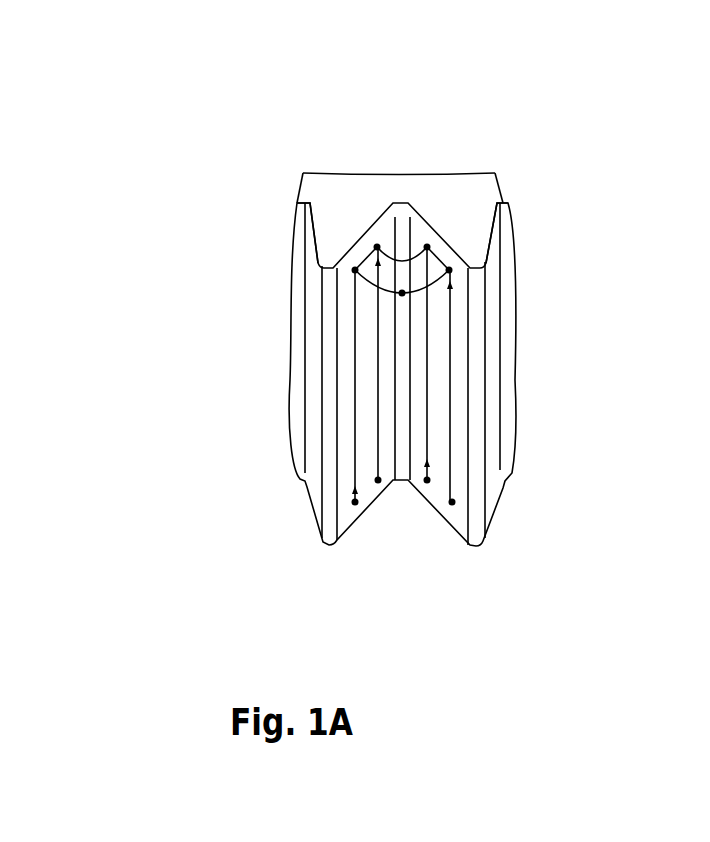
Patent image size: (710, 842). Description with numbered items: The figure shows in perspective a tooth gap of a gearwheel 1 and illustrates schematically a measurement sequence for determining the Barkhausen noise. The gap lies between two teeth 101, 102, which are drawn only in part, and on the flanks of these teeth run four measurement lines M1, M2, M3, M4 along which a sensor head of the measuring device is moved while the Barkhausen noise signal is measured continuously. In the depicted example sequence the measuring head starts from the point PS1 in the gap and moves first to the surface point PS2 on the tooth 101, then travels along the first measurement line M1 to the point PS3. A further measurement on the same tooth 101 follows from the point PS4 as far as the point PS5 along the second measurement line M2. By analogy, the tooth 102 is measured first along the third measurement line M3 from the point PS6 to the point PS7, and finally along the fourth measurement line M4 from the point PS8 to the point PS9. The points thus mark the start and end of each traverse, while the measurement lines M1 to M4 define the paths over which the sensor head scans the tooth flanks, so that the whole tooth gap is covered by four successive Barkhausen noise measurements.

The tapered roller / rolling element 1 is at (548, 160).
The tooth 101 is at (330, 233).
The tooth 102 is at (473, 242).
The measurement line M1 is at (353, 465).
The measurement line M2 is at (380, 397).
The measurement line M3 is at (427, 382).
The measurement line M4 is at (450, 440).
The point PS1 is at (402, 293).
The surface point PS2 is at (355, 270).
The point PS3 is at (377, 480).
The point PS4 is at (379, 481).
The point PS5 is at (377, 247).
The point PS6 is at (427, 247).
The point PS7 is at (427, 481).
The point PS8 is at (427, 480).
The point PS9 is at (449, 270).